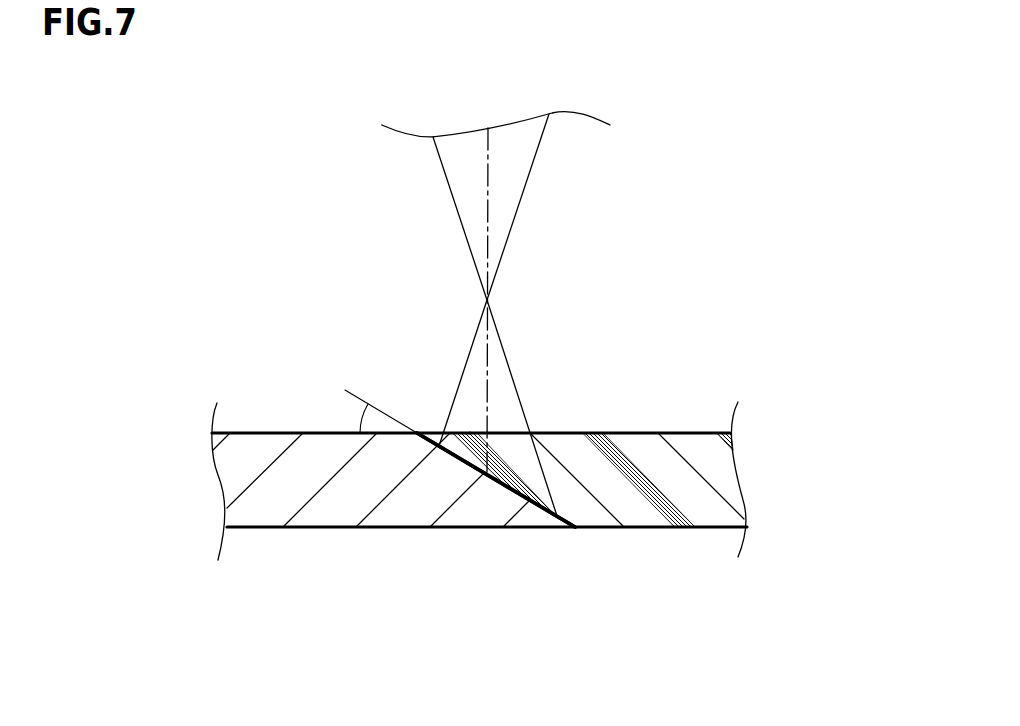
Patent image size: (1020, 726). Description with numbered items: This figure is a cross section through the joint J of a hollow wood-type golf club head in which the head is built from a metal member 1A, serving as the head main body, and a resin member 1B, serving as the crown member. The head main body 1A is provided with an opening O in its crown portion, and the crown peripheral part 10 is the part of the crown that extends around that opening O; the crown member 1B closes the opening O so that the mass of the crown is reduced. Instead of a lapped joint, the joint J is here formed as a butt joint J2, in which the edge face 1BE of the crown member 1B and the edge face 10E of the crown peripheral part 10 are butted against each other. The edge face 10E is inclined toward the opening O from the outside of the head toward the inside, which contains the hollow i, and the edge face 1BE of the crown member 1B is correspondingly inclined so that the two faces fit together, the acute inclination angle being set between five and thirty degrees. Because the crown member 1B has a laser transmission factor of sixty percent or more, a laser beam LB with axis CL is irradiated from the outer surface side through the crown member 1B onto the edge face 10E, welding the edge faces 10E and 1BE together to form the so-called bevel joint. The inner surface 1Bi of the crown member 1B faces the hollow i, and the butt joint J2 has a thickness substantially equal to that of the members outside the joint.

The axis of the laser beam CL is at (490, 160).
The laser beam LB is at (525, 188).
The metal member 1A is at (321, 426).
The crown peripheral part 10 is at (270, 433).
The edge face of the metal member 10E is at (437, 438).
The resin member 1B is at (656, 433).
The inner surface of the crown member 1Bi is at (717, 527).
The edge face of the resin member 1BE is at (528, 498).
The joint J is at (374, 590).
The butt joint J2 is at (455, 539).
The hollow i is at (617, 643).
The opening O is at (577, 527).